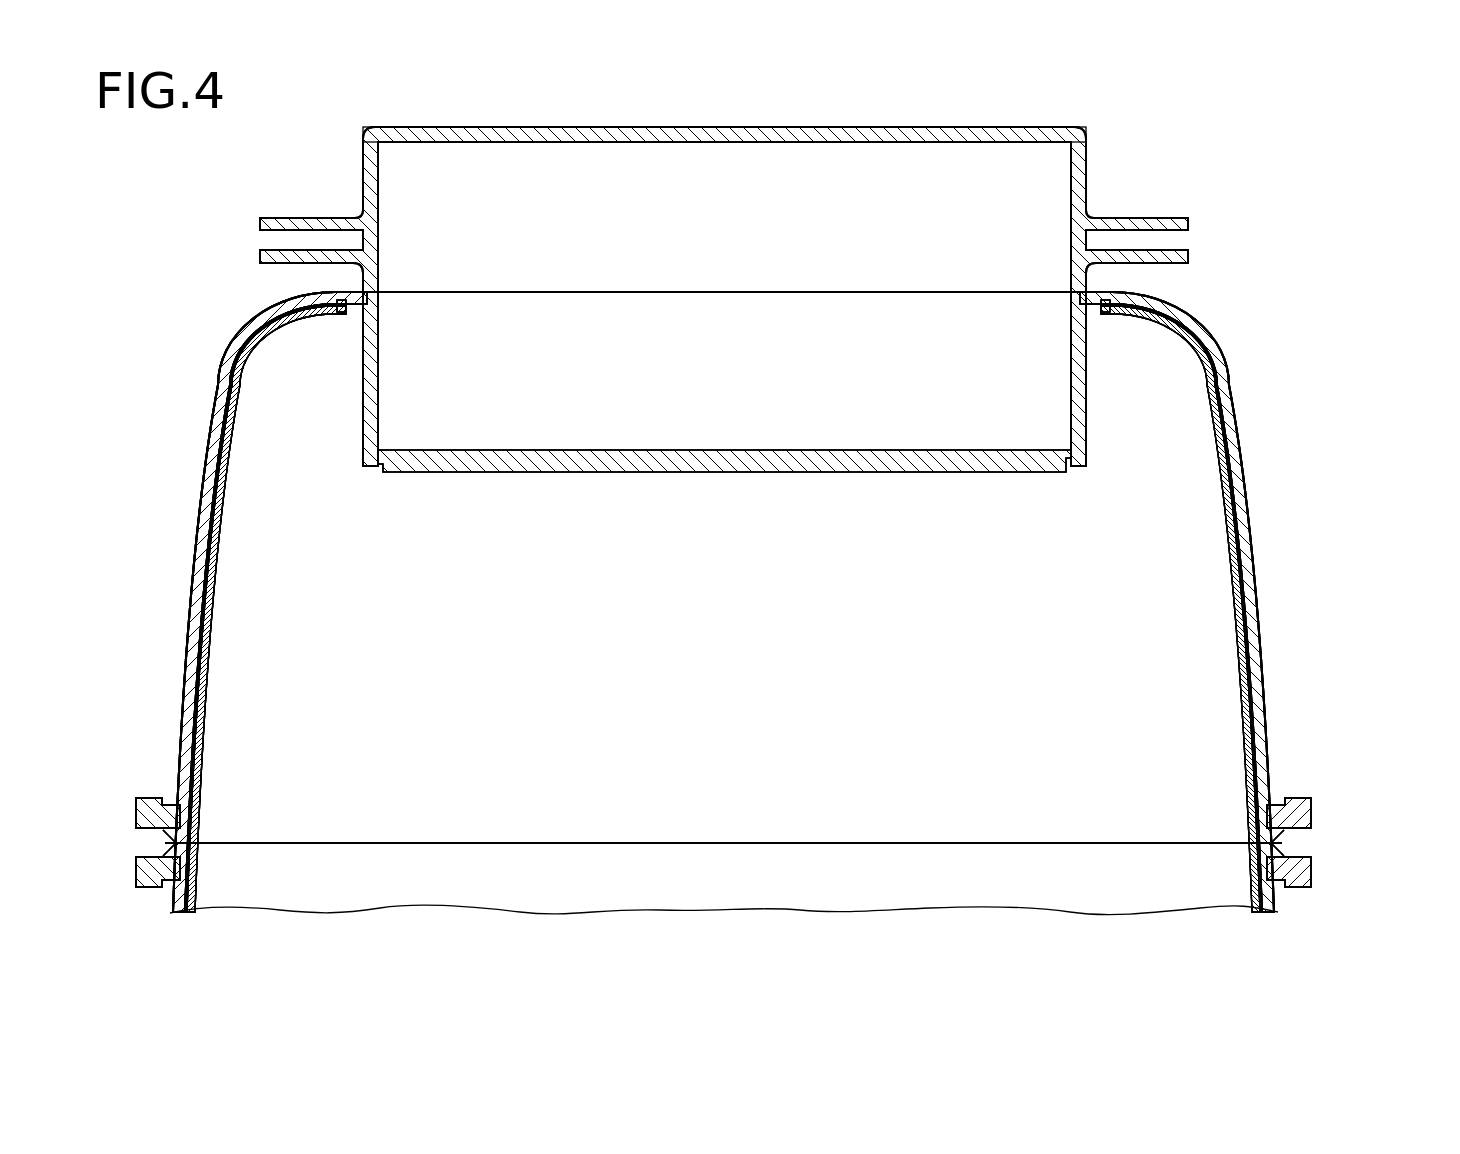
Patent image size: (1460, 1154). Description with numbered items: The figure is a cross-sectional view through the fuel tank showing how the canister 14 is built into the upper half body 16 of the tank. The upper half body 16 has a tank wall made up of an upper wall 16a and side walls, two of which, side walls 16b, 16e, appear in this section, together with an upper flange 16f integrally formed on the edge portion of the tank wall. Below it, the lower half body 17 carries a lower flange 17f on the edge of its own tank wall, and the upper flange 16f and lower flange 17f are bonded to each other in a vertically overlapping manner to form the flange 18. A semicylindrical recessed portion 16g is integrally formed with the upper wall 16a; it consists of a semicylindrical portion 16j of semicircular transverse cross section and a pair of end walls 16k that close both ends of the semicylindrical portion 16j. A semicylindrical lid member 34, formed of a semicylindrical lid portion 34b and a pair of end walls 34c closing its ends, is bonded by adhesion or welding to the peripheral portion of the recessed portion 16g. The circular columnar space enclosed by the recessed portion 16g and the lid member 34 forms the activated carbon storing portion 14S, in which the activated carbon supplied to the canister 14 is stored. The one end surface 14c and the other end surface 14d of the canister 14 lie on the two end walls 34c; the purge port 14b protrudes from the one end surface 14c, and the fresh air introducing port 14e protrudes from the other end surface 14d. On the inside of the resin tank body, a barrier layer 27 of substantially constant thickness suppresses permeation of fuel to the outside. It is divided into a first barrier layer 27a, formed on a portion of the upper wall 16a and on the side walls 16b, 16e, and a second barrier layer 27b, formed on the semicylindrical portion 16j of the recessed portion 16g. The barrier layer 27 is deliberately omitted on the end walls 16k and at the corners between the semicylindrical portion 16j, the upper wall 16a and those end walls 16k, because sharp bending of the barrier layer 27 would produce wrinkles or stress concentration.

The canister 14 is at (724, 296).
The purge port 14b is at (1148, 218).
The one end surface 14c is at (1080, 190).
The other end surface 14d is at (370, 188).
The fresh air introducing port 14e is at (303, 218).
The activated carbon storing portion 14S is at (842, 185).
The upper half body 16 is at (213, 377).
The upper wall 16a is at (318, 293).
The side wall 16b is at (198, 556).
The side wall 16e is at (290, 662).
The upper flange 16f is at (1303, 815).
The recessed portion 16g is at (642, 340).
The semicylindrical portion 16j is at (550, 360).
The end wall 16k is at (362, 395).
The lower half body 17 is at (924, 880).
The lower flange 17f is at (1303, 873).
The flange 18 is at (1400, 795).
The barrier layer 27 is at (374, 565).
The first barrier layer 27a is at (222, 500).
The second barrier layer 27b is at (710, 474).
The lid member 34 is at (982, 127).
The semicylindrical lid portion 34b is at (748, 127).
The end wall 34c is at (363, 158).